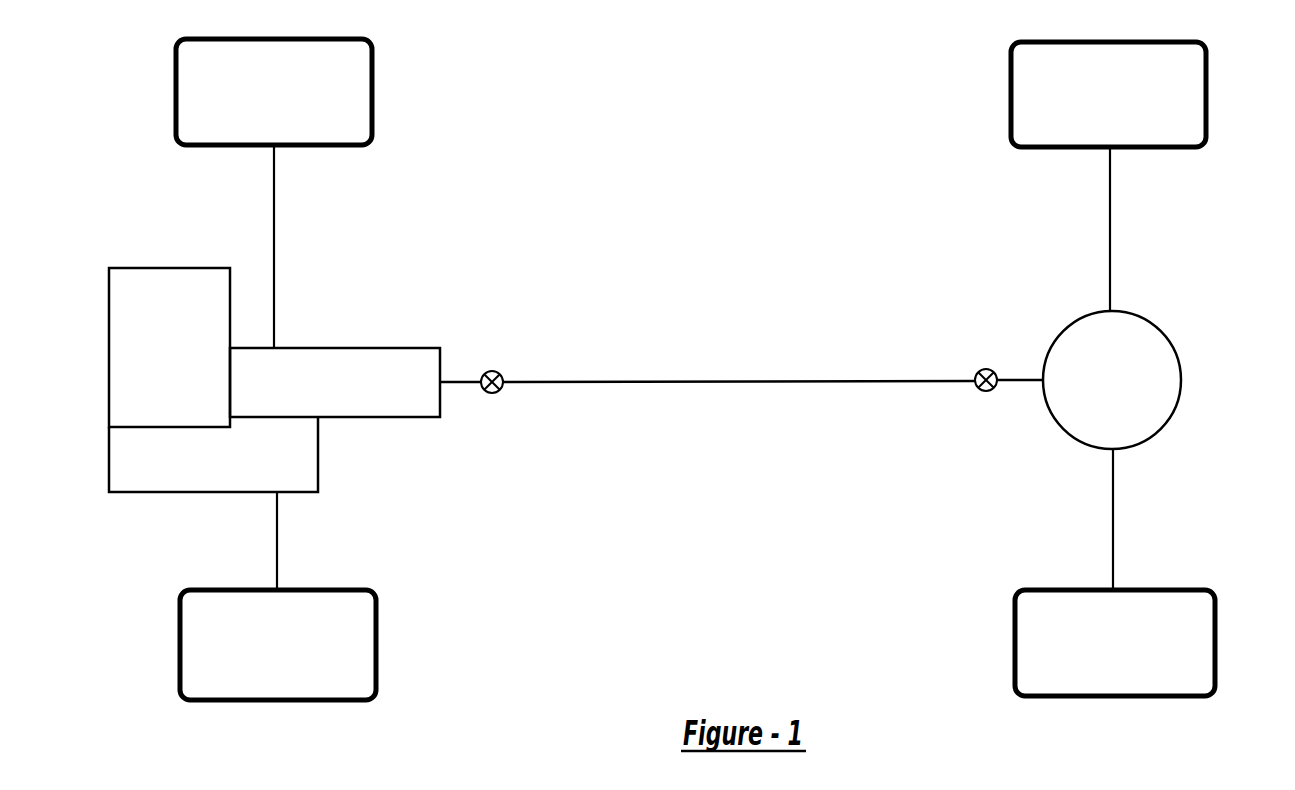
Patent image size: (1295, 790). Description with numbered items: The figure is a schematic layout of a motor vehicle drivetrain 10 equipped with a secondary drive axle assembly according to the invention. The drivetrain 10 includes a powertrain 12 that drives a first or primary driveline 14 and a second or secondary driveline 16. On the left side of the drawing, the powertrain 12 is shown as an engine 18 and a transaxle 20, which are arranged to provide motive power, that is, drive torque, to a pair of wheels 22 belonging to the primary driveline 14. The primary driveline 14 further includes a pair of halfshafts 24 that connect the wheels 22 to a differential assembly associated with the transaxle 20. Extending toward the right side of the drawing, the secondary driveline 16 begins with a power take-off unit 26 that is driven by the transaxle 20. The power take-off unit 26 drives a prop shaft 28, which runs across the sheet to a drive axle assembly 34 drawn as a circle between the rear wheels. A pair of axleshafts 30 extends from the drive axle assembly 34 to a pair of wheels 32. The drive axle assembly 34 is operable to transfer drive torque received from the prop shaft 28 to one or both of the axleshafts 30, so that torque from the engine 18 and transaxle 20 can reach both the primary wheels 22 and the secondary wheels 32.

The vehicular drivetrain 10 is at (754, 98).
The powertrain 12 is at (185, 437).
The primary driveline 14 is at (341, 303).
The secondary driveline 16 is at (741, 421).
The engine 18 is at (169, 347).
The transaxle 20 is at (213, 454).
The wheels 22 is at (374, 91).
The halfshafts 24 is at (274, 194).
The power take-off unit 26 is at (352, 348).
The prop shaft 28 is at (778, 381).
The axleshafts 30 is at (1110, 231).
The wheels 32 is at (1208, 91).
The drive axle assembly 34 is at (1153, 403).